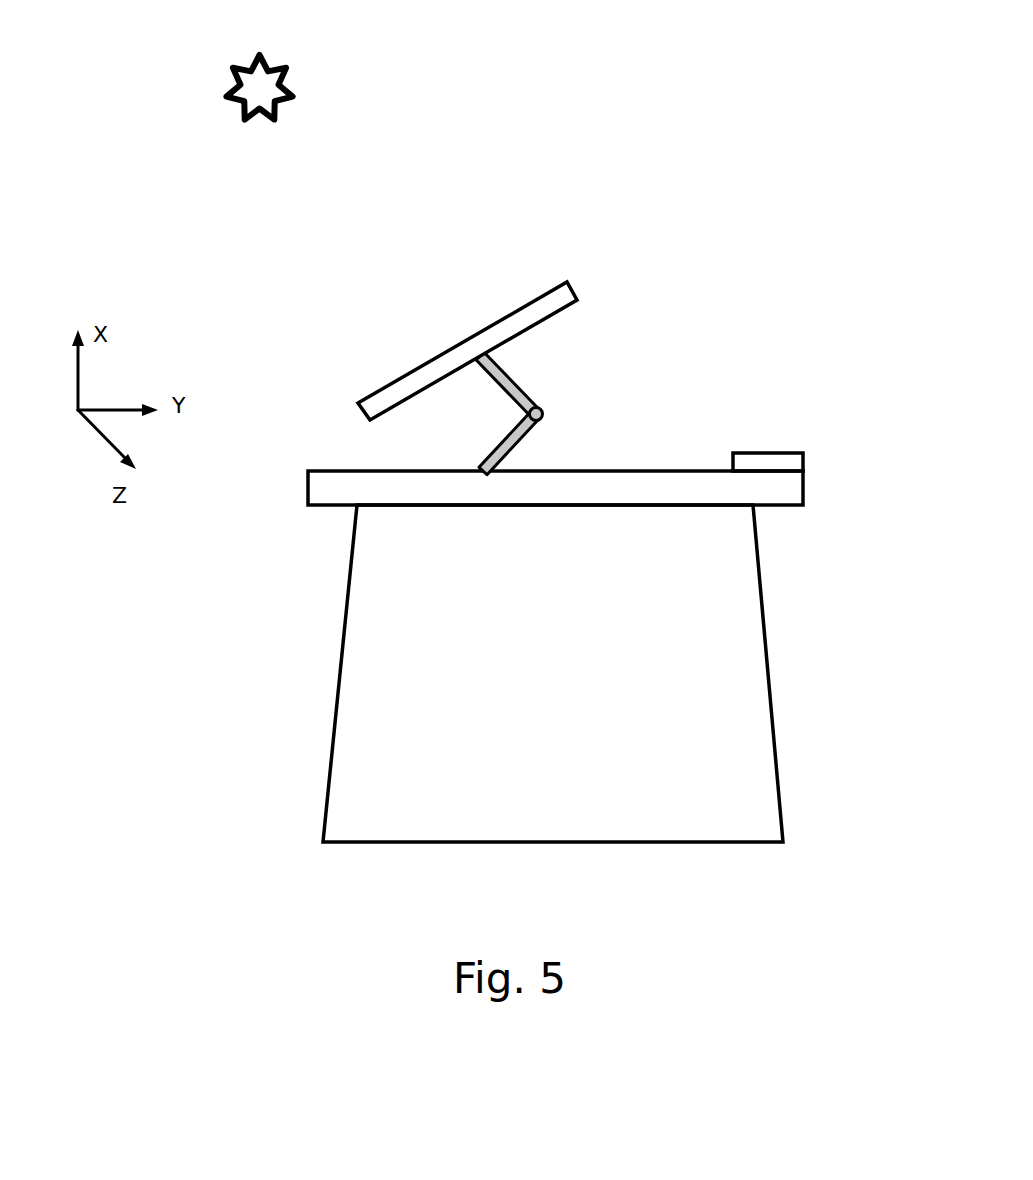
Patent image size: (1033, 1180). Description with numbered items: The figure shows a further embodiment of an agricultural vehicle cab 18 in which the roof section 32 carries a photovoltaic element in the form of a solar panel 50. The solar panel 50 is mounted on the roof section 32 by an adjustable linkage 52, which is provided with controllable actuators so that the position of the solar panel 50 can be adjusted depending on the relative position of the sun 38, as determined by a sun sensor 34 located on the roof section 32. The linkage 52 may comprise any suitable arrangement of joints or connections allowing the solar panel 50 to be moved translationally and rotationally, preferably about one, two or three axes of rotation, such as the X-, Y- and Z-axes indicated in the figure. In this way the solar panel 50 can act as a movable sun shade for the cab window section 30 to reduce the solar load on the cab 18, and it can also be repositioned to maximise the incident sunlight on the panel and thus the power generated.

The cab 18 is at (188, 647).
The cab window section 30 is at (382, 745).
The roof section 32 is at (735, 487).
The sun sensor 34 is at (770, 453).
The sun 38 is at (192, 52).
The solar panel 50 is at (498, 317).
The adjustable linkage 52 is at (515, 446).